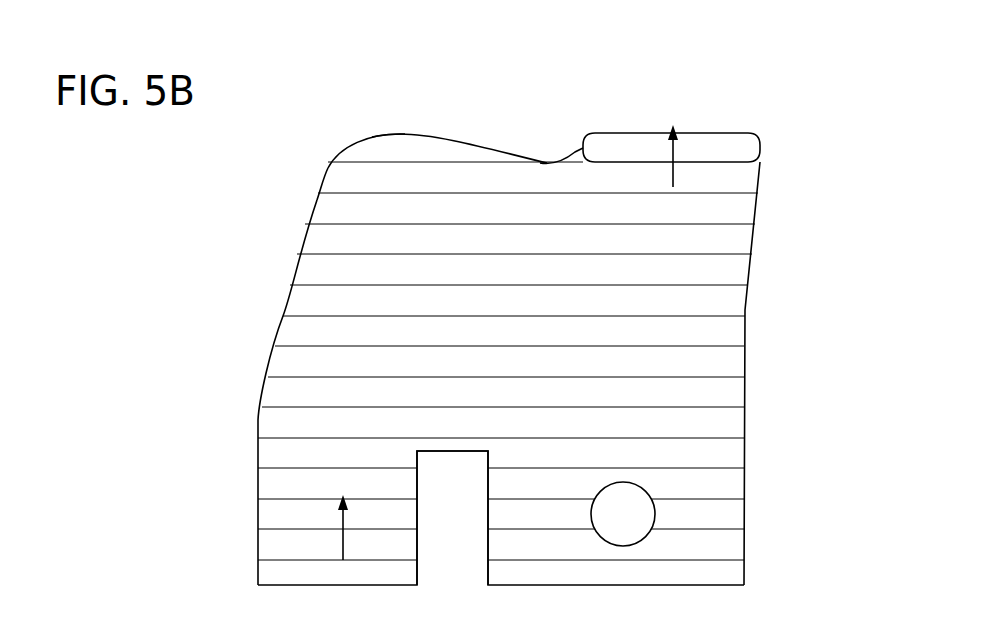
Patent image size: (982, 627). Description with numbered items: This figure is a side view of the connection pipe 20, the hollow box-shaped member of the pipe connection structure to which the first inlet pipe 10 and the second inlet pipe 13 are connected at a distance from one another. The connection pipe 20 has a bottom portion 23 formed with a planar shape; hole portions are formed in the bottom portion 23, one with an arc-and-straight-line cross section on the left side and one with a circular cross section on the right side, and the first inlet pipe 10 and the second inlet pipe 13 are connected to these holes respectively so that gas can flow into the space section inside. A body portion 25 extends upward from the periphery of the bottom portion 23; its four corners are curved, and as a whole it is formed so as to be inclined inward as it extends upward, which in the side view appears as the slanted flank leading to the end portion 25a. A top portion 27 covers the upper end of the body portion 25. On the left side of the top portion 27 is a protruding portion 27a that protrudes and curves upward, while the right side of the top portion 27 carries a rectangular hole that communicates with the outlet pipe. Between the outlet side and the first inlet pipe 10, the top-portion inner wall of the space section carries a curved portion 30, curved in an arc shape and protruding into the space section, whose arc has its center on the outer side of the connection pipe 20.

The first inlet pipe 10 is at (258, 540).
The second inlet pipe 13 is at (746, 537).
The connection pipe 20 is at (773, 122).
The bottom portion 23 is at (452, 452).
The body portion 25 is at (328, 300).
The end portion 25a is at (323, 242).
The top portion 27 is at (420, 148).
The protruding portion 27a is at (390, 152).
The curved portion 30 is at (547, 162).